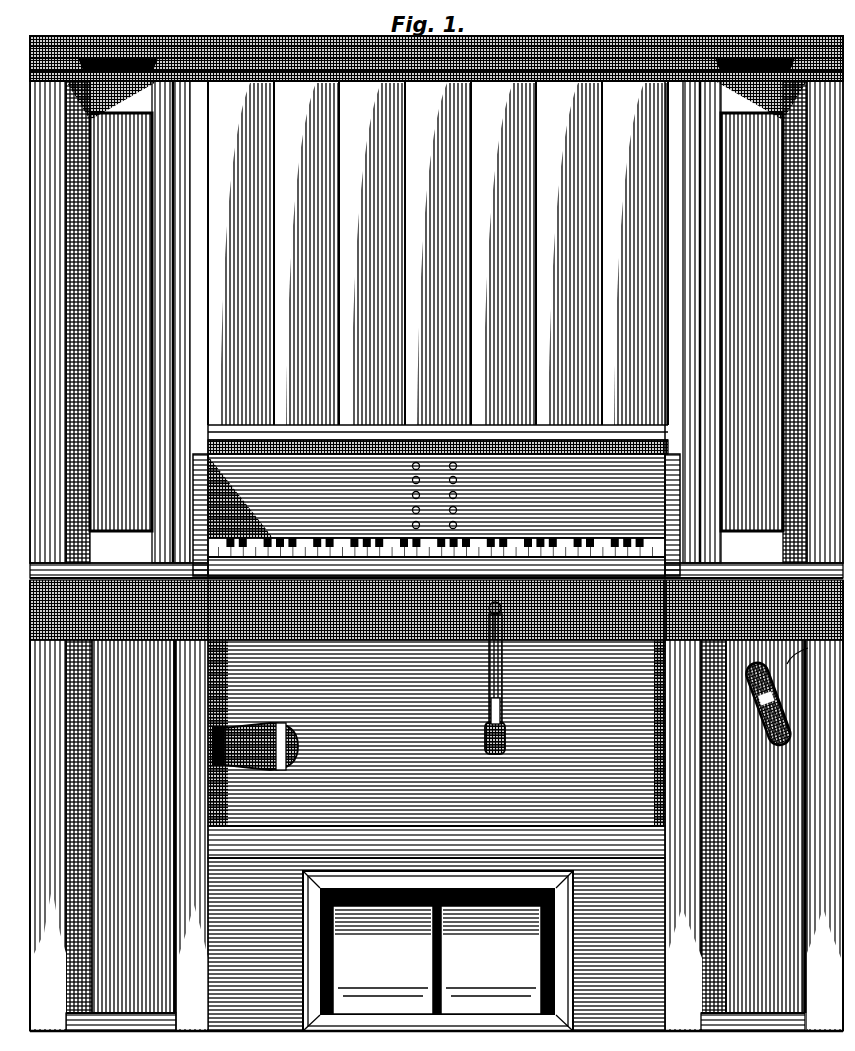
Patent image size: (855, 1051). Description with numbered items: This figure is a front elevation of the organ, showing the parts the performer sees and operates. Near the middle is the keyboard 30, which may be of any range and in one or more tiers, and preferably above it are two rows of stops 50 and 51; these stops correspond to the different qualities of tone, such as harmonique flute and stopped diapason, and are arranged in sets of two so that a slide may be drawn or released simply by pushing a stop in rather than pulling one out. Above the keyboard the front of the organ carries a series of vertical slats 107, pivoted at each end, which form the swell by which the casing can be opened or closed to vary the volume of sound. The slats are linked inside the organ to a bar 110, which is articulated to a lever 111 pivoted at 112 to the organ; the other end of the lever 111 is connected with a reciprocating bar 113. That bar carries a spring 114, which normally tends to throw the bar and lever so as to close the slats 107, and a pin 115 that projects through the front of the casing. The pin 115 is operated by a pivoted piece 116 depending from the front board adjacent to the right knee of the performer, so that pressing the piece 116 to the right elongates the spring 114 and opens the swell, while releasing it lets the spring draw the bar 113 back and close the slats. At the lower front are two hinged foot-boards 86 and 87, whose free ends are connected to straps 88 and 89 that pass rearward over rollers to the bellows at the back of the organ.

The keyboard 30 is at (288, 545).
The stops 50 is at (449, 460).
The stops 51 is at (404, 460).
The hinged foot-board 86 is at (383, 960).
The hinged foot-board 87 is at (491, 960).
The strap 88 is at (374, 888).
The strap 89 is at (489, 888).
The vertical slats 107 is at (438, 253).
The bar 110 is at (754, 329).
The lever 111 is at (762, 704).
The pivot 112 is at (813, 648).
The reciprocating bar 113 is at (256, 758).
The spring 114 is at (230, 720).
The pin 115 is at (498, 728).
The pivoted piece 116 is at (481, 669).